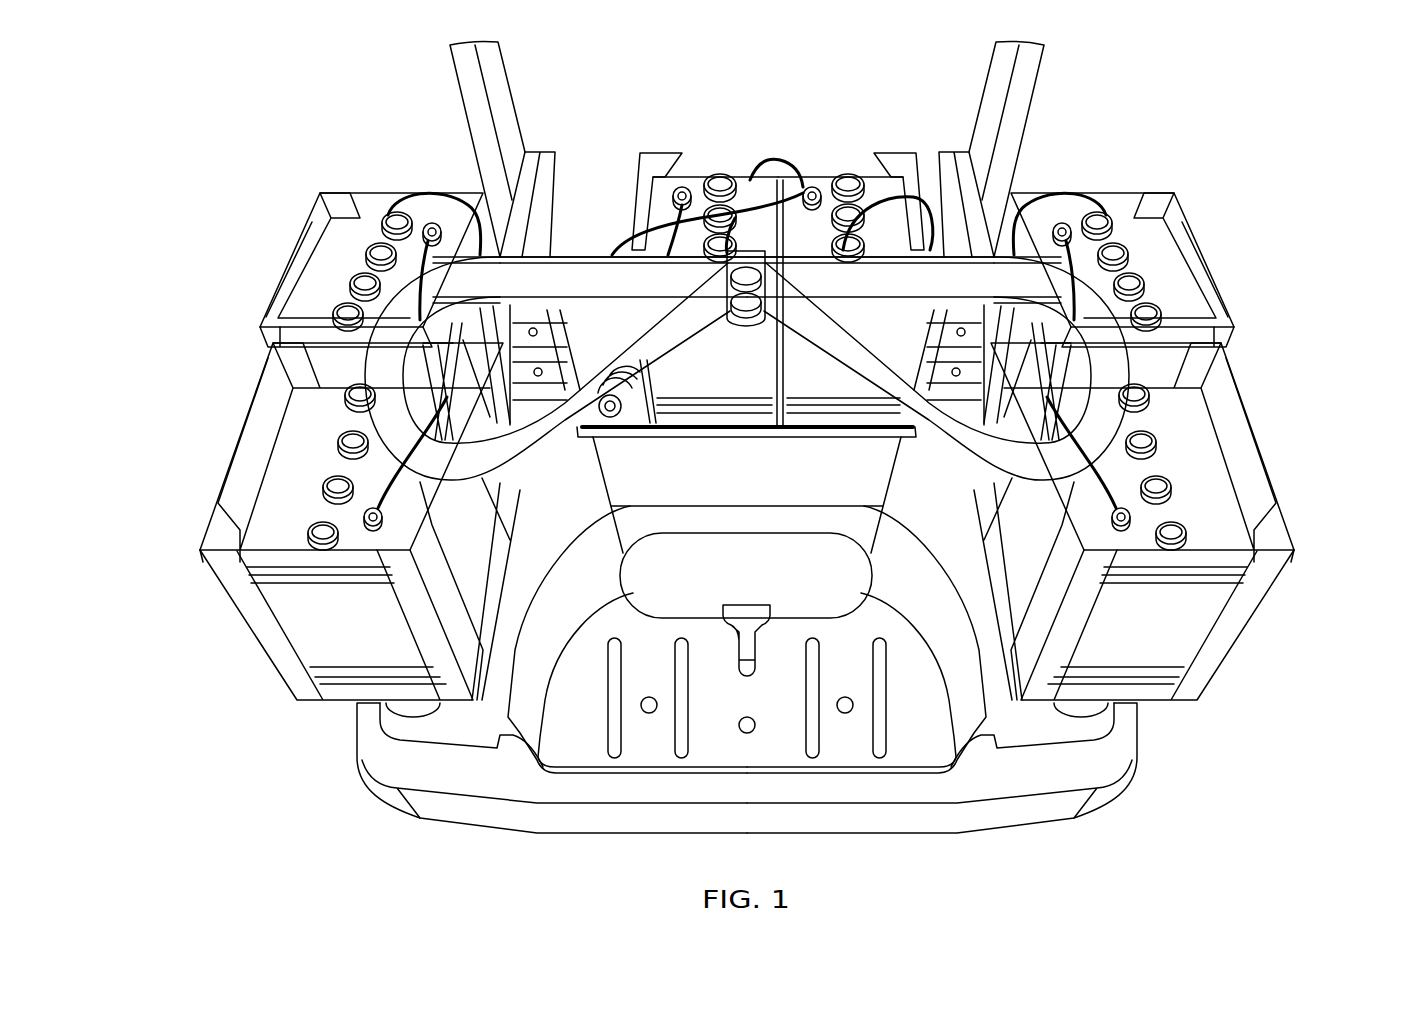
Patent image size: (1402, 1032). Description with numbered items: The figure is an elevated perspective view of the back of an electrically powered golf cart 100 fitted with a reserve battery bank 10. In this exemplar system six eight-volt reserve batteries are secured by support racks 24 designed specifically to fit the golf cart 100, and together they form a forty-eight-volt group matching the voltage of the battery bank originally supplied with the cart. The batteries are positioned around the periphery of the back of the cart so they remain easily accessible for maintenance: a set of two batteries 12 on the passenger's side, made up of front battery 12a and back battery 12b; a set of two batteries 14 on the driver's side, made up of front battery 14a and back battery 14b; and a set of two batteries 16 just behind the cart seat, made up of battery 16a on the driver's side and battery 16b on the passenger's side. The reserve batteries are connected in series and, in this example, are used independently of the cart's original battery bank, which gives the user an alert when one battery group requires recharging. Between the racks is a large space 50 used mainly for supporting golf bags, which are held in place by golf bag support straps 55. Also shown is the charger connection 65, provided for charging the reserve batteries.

The reserve battery bank 10 is at (745, 478).
The reserve batteries on passenger side of cart 12 is at (1189, 404).
The front reserve battery on passenger side of cart 12a is at (1127, 228).
The back reserve battery on passenger side of cart 12b is at (1163, 528).
The reserve batteries on driver's side of cart 14 is at (303, 442).
The front battery on driver's side of cart 14a is at (330, 270).
The back battery on driver's side of cart 14b is at (338, 521).
The reserve batteries behind seat of cart 16 is at (751, 224).
The reserve battery behind seat on driver's side of cart 16a is at (662, 160).
The reserve battery behind seat on passenger's side of cart 16b is at (855, 264).
The reserve battery support racks 24 is at (335, 190).
The golf bag support area 50 is at (852, 744).
The golf bag support straps 55 is at (538, 442).
The charger connection 65 is at (620, 418).
The golf cart 100 is at (468, 830).